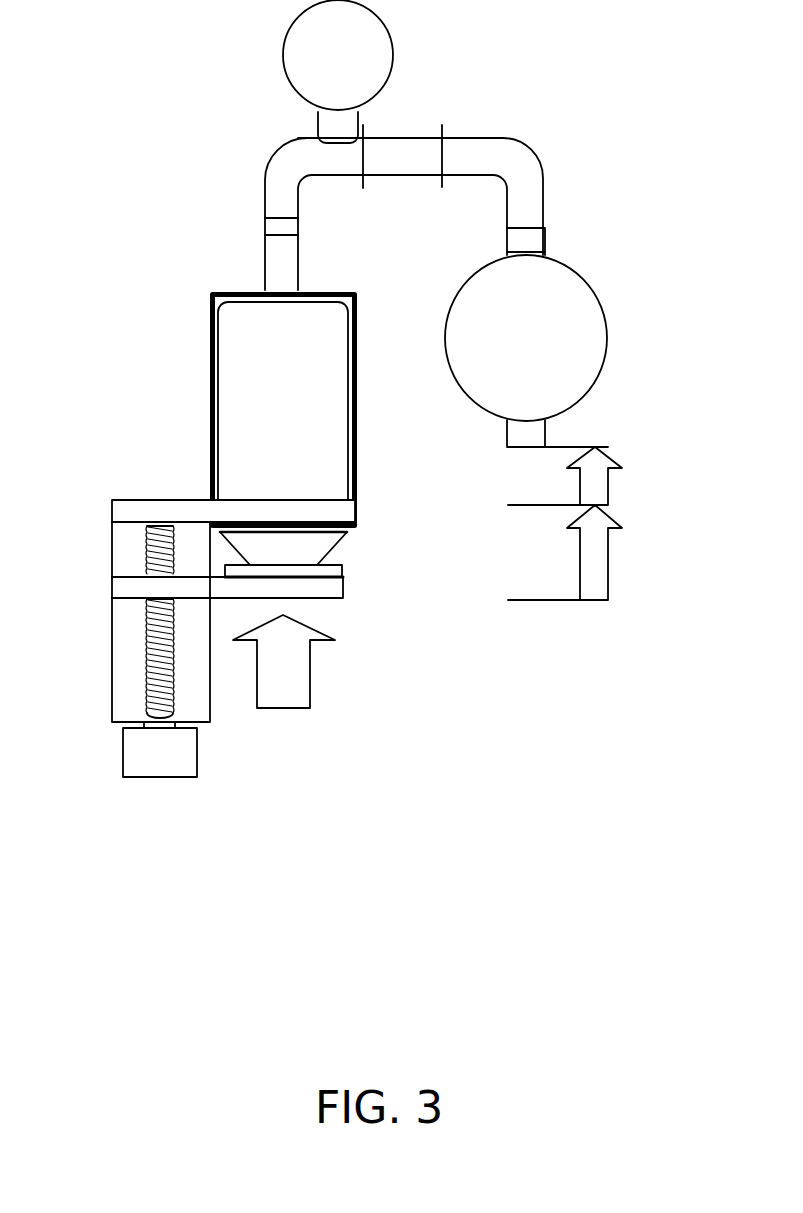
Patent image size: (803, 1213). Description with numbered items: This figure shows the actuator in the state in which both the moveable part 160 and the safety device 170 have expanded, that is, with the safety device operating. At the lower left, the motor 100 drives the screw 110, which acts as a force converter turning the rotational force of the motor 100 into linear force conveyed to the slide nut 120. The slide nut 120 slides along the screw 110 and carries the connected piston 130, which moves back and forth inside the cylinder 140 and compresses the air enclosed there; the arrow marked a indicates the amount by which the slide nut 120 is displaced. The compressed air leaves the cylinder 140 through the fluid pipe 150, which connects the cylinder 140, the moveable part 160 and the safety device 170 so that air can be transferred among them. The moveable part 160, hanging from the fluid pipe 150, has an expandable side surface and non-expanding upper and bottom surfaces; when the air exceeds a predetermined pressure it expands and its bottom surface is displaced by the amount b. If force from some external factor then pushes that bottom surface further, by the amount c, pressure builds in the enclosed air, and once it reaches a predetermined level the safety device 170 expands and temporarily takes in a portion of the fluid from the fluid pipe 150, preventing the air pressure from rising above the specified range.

The motor 100 is at (158, 780).
The screw 110 is at (140, 558).
The slide nut 120 is at (341, 598).
The piston 130 is at (347, 538).
The cylinder 140 is at (210, 325).
The fluid pipe 150 is at (463, 138).
The moveable part 160 is at (608, 338).
The safety device 170 is at (282, 55).
The displacement amount of slide nut a is at (292, 708).
The displacement amount of bottom surface of moveable part b is at (605, 558).
The displacement amount due to external force c is at (605, 475).